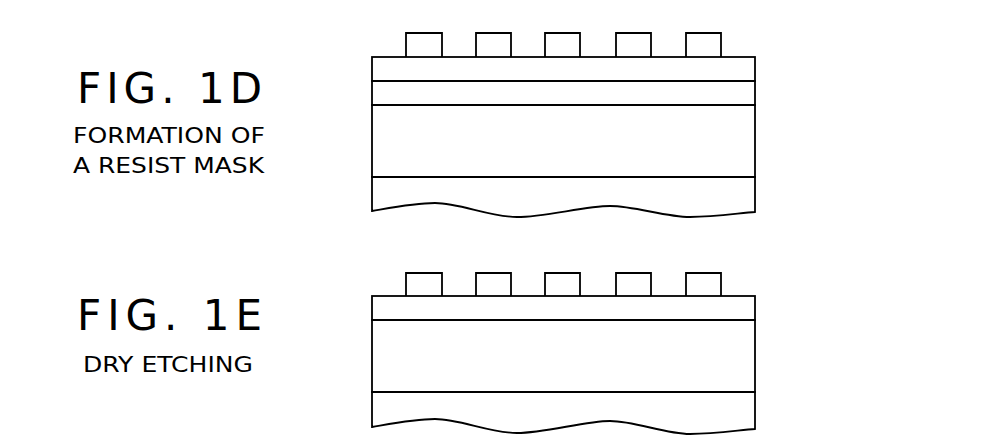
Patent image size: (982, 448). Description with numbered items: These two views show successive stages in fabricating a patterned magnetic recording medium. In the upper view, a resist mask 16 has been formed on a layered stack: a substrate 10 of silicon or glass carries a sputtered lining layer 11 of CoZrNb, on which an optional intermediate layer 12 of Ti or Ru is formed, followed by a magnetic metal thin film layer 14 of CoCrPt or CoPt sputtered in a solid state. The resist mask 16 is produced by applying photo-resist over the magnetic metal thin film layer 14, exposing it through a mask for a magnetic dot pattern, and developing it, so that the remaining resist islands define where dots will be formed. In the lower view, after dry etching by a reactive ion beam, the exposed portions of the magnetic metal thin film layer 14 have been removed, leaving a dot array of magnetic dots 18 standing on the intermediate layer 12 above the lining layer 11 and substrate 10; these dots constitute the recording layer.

In FIG. 1D, the substrate 10 is at (740, 199).
In FIG. 1E, the substrate 10 is at (740, 412).
In FIG. 1D, the lining layer 11 is at (740, 147).
In FIG. 1E, the lining layer 11 is at (740, 367).
In FIG. 1D, the intermediate layer 12 is at (740, 98).
In FIG. 1E, the intermediate layer 12 is at (740, 312).
In FIG. 1D, the magnetic metal thin film layer 14 is at (740, 71).
In FIG. 1D, the resist mask 16 is at (712, 46).
In FIG. 1E, the magnetic dots 18 is at (712, 287).